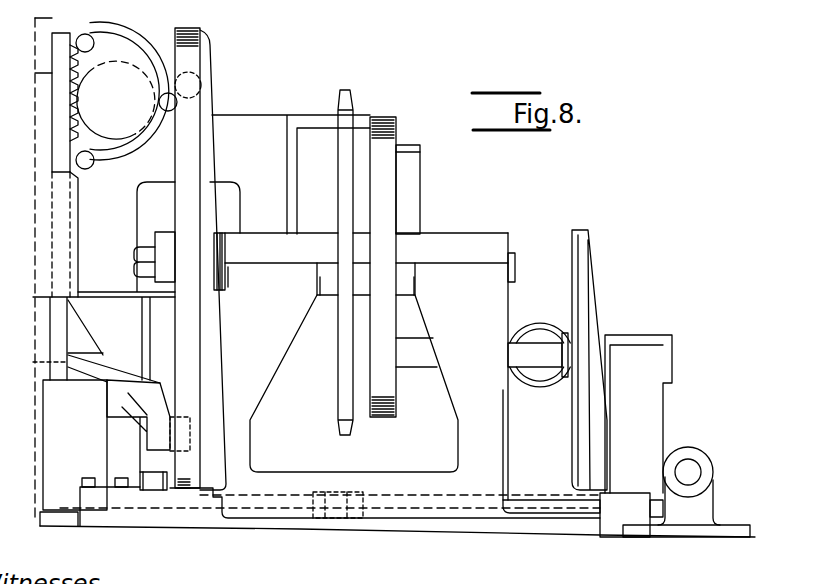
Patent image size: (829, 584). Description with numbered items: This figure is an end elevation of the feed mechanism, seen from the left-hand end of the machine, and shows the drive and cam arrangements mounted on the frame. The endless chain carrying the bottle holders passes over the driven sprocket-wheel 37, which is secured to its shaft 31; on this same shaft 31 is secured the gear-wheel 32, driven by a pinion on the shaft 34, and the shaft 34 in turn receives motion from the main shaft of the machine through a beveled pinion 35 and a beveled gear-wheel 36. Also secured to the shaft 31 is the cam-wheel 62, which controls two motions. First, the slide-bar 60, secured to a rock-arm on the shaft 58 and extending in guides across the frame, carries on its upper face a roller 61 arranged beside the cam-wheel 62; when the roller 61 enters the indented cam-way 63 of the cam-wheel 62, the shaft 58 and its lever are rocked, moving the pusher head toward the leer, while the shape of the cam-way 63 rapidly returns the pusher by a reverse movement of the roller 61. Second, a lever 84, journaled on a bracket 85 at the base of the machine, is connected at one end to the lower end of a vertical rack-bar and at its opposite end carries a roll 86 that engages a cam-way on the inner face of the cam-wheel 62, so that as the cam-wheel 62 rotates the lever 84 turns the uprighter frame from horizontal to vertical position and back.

The shaft 31 is at (152, 252).
The gear-wheel 32 is at (385, 217).
The shaft 34 is at (518, 343).
The beveled pinion 35 is at (548, 387).
The beveled gear-wheel 36 is at (578, 275).
The sprocket-wheel 37 is at (342, 127).
The shaft 58 is at (690, 470).
The slide-bar 60 is at (527, 503).
The roller 61 is at (160, 490).
The cam-wheel 62 is at (185, 370).
The cam-way 63 is at (192, 90).
The lever 84 is at (108, 358).
The bracket 85 is at (73, 453).
The roll 86 is at (177, 433).